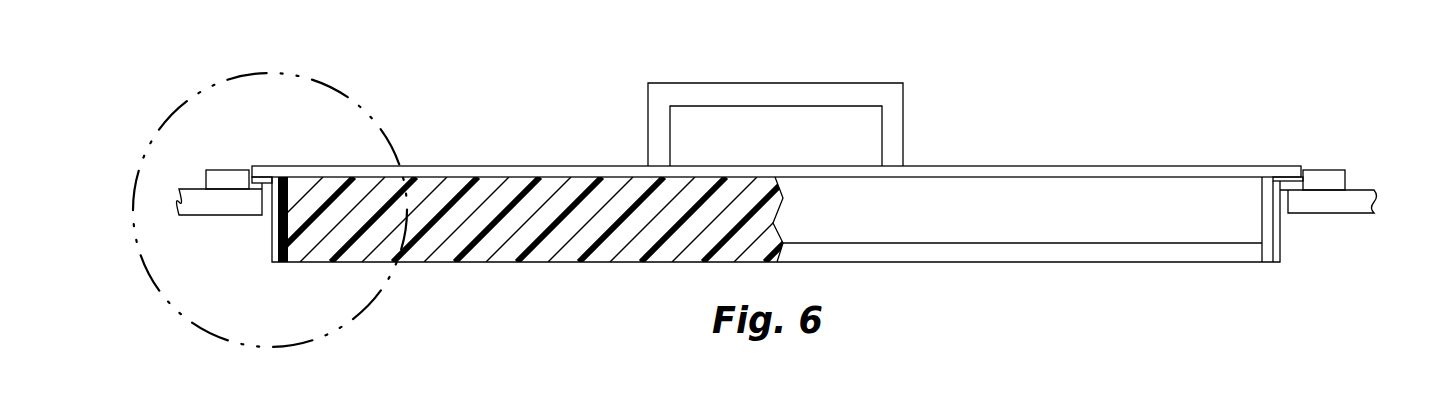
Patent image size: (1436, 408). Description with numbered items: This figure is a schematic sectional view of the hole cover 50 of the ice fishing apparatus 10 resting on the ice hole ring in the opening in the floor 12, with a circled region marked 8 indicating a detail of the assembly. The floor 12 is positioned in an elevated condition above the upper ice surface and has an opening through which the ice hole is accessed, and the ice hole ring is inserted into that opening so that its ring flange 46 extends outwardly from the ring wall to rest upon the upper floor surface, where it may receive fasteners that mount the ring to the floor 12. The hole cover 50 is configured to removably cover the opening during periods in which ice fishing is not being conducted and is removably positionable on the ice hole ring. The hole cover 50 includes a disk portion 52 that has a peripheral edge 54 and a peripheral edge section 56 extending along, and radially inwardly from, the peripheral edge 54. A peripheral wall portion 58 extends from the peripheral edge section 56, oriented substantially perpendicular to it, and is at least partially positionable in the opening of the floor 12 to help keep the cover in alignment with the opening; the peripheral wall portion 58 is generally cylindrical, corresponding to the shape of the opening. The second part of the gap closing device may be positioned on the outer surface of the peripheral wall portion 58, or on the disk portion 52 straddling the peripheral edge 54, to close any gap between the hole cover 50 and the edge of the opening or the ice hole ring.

The detail view circle (FIG. 8) 8 is at (337, 330).
The ice fishing apparatus 10 is at (1258, 95).
The floor 12 is at (1335, 205).
The ring flange 46 is at (1330, 178).
The hole cover 50 is at (1018, 147).
The disk portion 52 is at (1112, 168).
The peripheral edge 54 is at (1305, 168).
The peripheral edge section 56 is at (1253, 168).
The peripheral wall portion 58 is at (1280, 237).